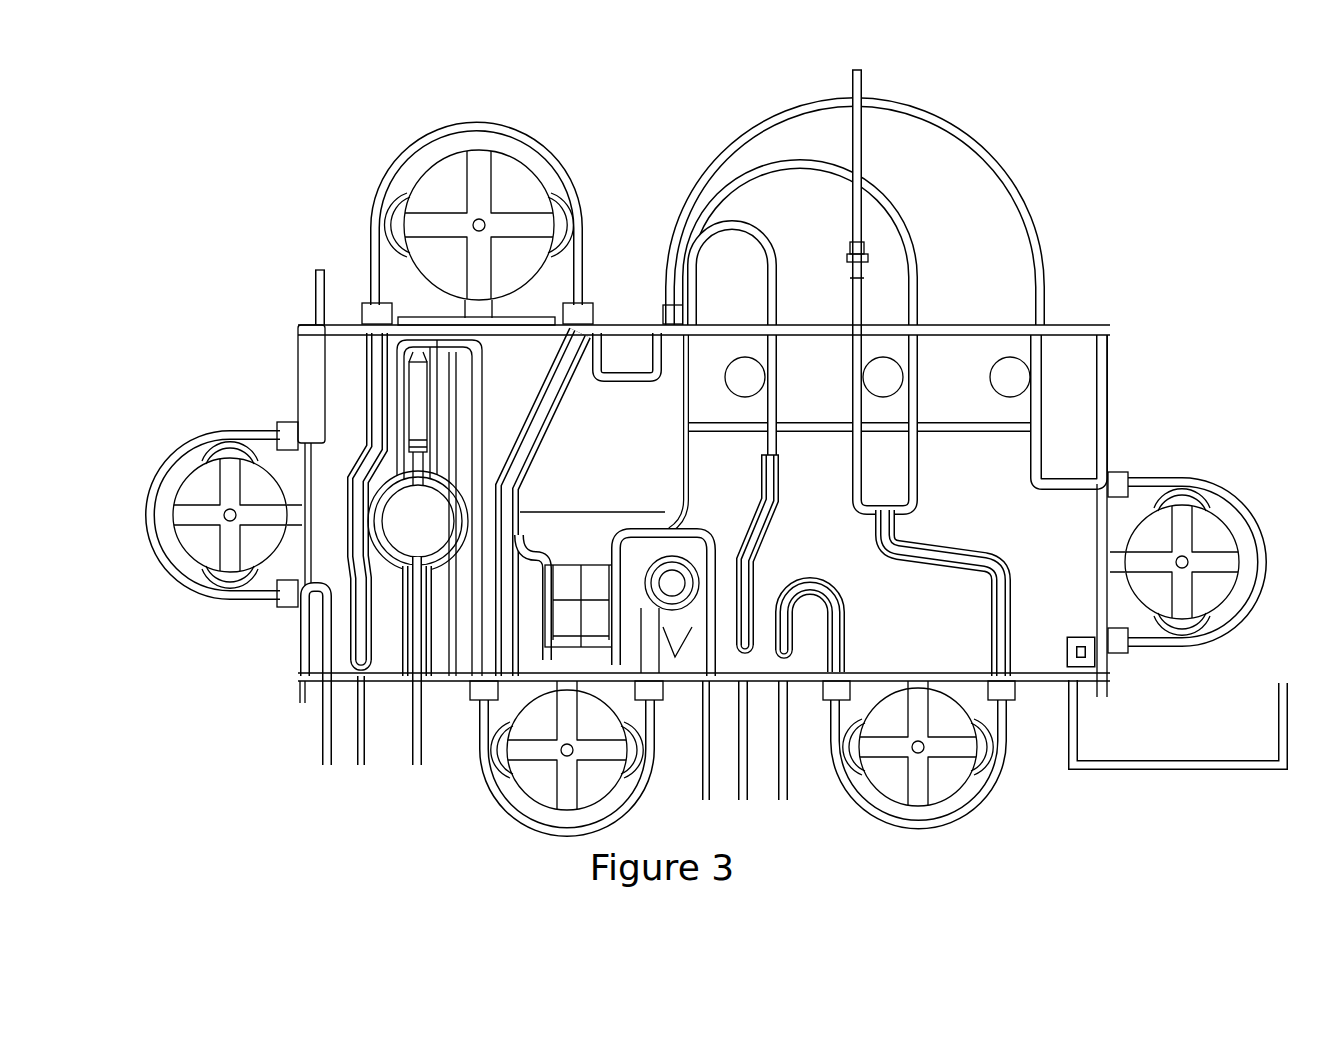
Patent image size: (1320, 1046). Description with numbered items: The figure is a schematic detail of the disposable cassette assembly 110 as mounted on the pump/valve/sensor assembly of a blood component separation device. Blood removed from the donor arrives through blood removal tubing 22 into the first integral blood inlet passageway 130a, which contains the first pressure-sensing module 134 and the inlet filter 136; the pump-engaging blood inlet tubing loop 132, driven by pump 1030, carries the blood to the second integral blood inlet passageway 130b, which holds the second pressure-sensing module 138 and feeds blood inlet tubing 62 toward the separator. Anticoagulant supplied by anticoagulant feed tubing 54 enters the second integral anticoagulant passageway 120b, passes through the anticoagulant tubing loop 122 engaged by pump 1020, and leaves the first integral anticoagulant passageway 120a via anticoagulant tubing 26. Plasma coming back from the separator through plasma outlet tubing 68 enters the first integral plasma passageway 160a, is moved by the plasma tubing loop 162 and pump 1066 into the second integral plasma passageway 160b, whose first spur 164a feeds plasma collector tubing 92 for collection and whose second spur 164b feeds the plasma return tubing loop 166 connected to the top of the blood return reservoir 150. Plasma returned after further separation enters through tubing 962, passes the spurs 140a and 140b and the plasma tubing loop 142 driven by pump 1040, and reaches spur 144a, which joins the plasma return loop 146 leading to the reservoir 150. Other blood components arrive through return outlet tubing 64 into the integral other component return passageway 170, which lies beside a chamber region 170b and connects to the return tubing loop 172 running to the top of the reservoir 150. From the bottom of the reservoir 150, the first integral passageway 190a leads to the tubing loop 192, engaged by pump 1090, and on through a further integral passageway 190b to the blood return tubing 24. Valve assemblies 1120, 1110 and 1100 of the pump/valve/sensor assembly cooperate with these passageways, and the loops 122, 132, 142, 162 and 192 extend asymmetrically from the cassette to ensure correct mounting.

The cassette assembly 110 is at (268, 233).
The anticoagulant feed tubing 54 is at (315, 297).
The plasma collector tubing 92 is at (863, 92).
The blood removal tubing 22 is at (423, 752).
The blood return tubing 24 is at (357, 758).
The anticoagulant tubing 26 is at (320, 752).
The blood inlet tubing 62 is at (710, 800).
The return outlet tubing 64 is at (748, 800).
The plasma outlet tubing 68 is at (788, 800).
The first integral anticoagulant passageway 120a is at (320, 648).
The second integral anticoagulant passageway 120b is at (318, 390).
The anticoagulant tubing loop 122 is at (175, 455).
The first integral blood inlet passageway 130a is at (402, 663).
The second integral blood inlet passageway 130b is at (675, 657).
The blood inlet tubing loop 132 is at (493, 797).
The first pressure-sensing module 134 is at (418, 521).
The inlet filter 136 is at (415, 397).
The second pressure-sensing module 138 is at (670, 570).
The spur 140a is at (1075, 636).
The spur 140b is at (1067, 493).
The plasma tubing loop 142 is at (1213, 483).
The spur 144a is at (1040, 435).
The plasma return loop 146 is at (1015, 185).
The blood return reservoir 150 is at (618, 322).
The first integral plasma passageway 160a is at (847, 628).
The second integral plasma passageway 160b is at (990, 640).
The plasma tubing loop 162 is at (1000, 770).
The first spur 164a is at (847, 497).
The second spur 164b is at (920, 490).
The plasma return tubing loop 166 is at (880, 196).
The integral other component return passageway 170 is at (770, 533).
The chamber 170b is at (707, 492).
The return tubing loop 172 is at (760, 235).
The first integral passageway 190a is at (548, 400).
The channel 190b is at (345, 600).
The tubing loop 192 is at (393, 160).
The tubing 962 is at (1128, 755).
The pump 1020 is at (185, 550).
The pump 1030 is at (545, 807).
The pump 1040 is at (1225, 530).
The pump 1066 is at (958, 774).
The pump 1090 is at (455, 150).
The valve assembly 1100 is at (1025, 362).
The valve assembly 1110 is at (895, 362).
The valve assembly 1120 is at (760, 362).